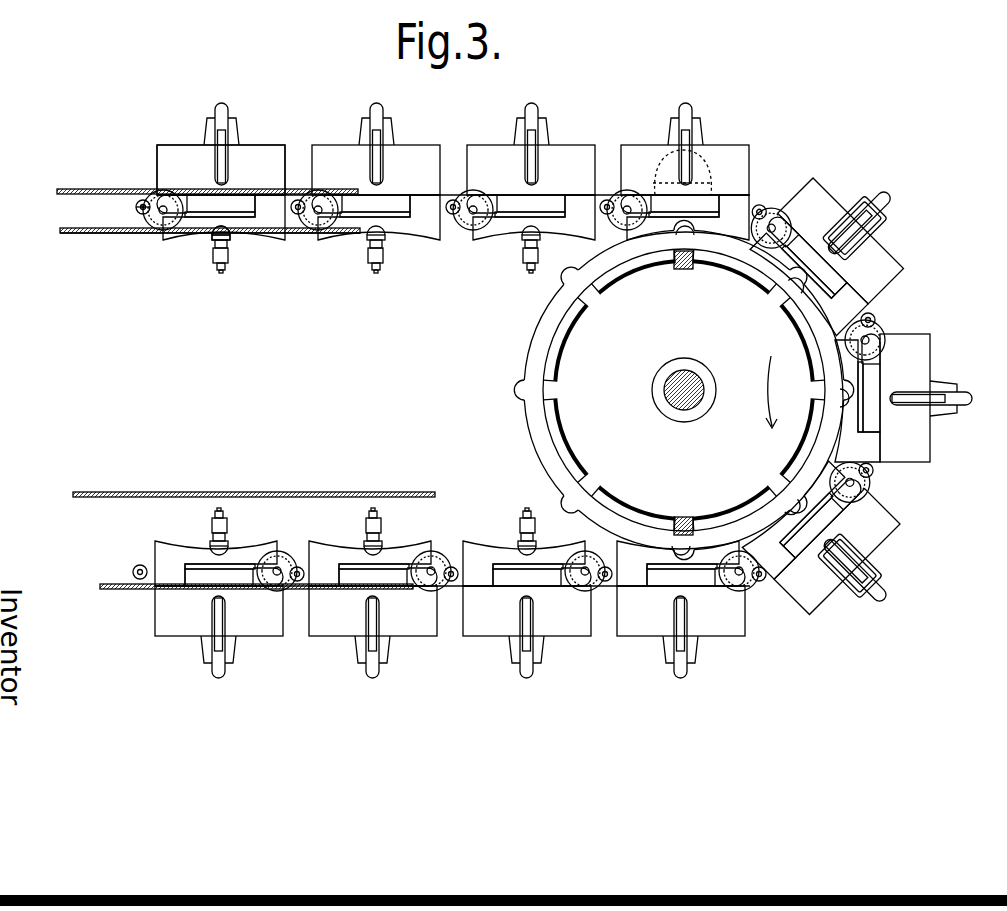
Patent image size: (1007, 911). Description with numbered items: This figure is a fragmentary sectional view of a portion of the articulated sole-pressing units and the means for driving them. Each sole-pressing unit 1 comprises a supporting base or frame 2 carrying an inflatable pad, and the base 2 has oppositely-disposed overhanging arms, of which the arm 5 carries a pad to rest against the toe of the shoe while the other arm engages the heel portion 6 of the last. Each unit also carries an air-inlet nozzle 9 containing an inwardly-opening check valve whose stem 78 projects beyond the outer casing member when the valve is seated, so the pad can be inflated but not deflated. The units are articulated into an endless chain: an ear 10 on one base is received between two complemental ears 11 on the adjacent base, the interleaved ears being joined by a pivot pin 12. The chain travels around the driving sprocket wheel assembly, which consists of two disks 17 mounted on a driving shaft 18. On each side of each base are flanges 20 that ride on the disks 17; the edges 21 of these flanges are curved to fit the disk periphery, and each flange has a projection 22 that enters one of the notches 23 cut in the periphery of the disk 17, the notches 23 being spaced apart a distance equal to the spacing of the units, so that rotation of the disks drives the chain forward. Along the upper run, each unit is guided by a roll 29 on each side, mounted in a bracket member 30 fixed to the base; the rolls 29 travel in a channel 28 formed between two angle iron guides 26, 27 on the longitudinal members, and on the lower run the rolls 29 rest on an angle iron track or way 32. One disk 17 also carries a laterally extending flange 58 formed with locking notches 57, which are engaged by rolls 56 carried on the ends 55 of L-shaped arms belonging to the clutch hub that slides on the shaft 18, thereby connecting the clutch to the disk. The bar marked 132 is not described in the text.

The sole-pressing unit 1 is at (544, 377).
The supporting base or frame 2 is at (300, 156).
The overhanging arm 5 is at (583, 393).
The heel portion 6 is at (597, 248).
The air-inlet nozzle 9 is at (383, 386).
The ear 10 is at (516, 380).
The complemental ears 11 is at (532, 385).
The pivot pin 12 is at (513, 389).
The disk 17 is at (521, 343).
The driving shaft 18 is at (664, 390).
The flange 20 is at (526, 370).
The edge of flange 21 is at (541, 385).
The projection 22 is at (560, 422).
The notch 23 is at (522, 389).
The angle iron guide 26 is at (82, 189).
The angle iron guide 27 is at (78, 233).
The channel 28 is at (123, 233).
The roll 29 is at (476, 357).
The bracket member 30 is at (507, 389).
The angle iron track or way 32 is at (125, 590).
The end of L-shaped arm 55 is at (677, 269).
The roll 56 is at (694, 269).
The locking notch 57 is at (589, 298).
The flange 58 is at (561, 449).
The valve stem 78 is at (371, 394).
The bar 132 is at (528, 412).